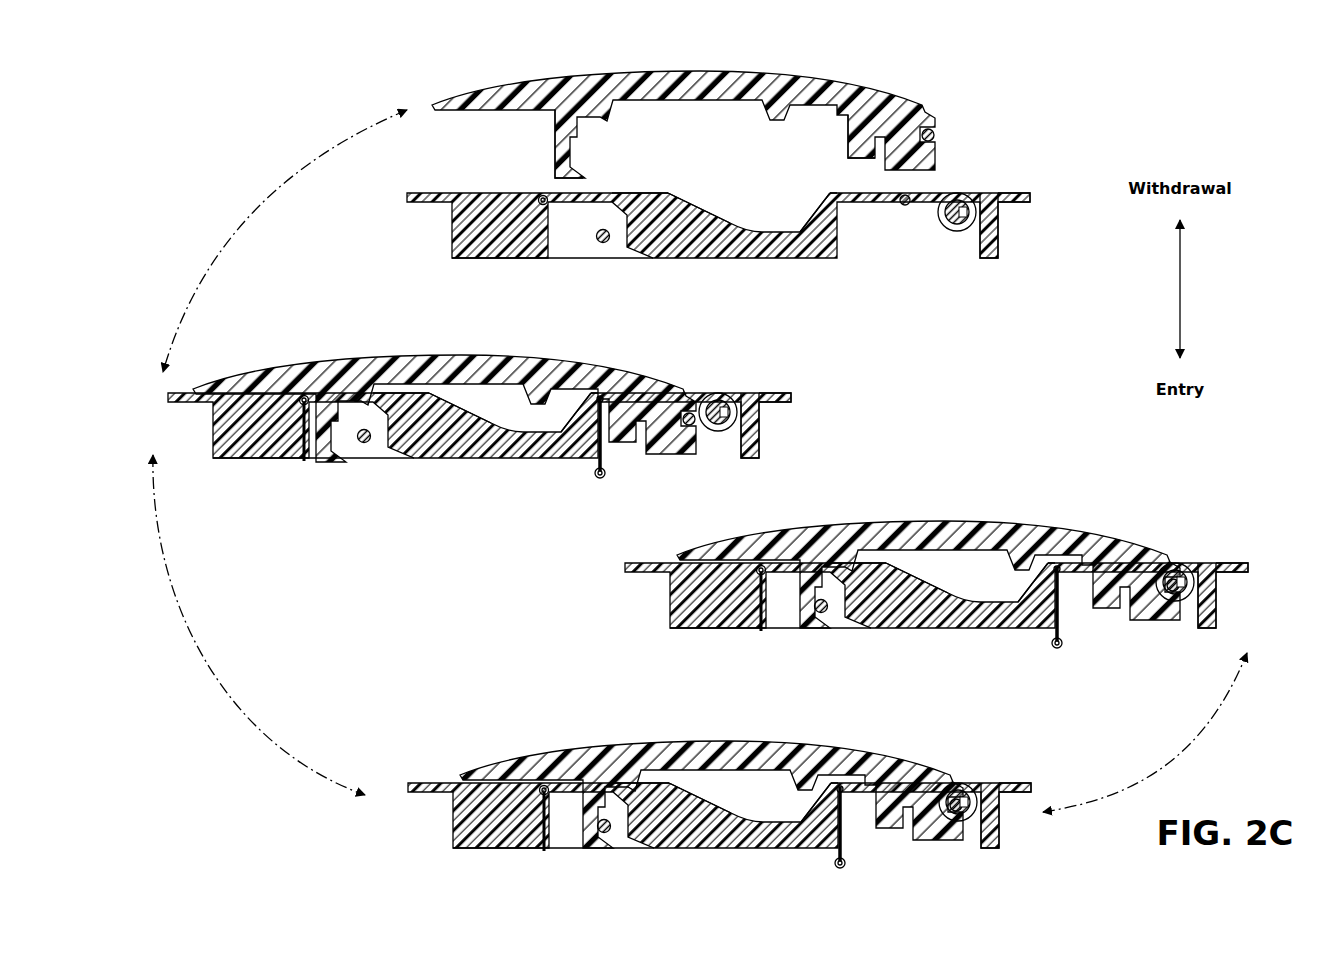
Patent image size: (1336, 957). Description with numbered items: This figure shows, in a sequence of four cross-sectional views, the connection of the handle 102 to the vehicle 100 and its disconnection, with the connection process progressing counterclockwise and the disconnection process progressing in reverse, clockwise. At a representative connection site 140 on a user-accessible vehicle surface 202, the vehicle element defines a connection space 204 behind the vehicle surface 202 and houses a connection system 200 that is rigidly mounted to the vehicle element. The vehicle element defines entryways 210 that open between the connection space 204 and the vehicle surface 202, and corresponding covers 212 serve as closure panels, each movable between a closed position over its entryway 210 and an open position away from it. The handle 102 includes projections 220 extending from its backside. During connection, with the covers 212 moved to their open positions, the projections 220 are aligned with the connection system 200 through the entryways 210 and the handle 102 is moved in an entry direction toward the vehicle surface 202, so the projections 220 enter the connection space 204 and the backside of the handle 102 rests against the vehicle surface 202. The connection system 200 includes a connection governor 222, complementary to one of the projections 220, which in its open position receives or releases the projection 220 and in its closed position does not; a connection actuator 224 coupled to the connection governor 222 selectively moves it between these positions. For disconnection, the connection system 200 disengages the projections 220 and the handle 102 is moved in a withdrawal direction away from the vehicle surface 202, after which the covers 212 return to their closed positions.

The vehicle 100 is at (998, 160).
The handle 102 is at (668, 72).
The connection site 140 is at (1026, 184).
The connection system 200 is at (745, 262).
The vehicle surface 202 is at (1000, 194).
The connection space 204 is at (635, 283).
The entryway 210 is at (600, 189).
The cover 212 is at (626, 210).
The projection 220 is at (556, 152).
The connection governor 222 is at (1000, 207).
The connection actuator 224 is at (1000, 234).